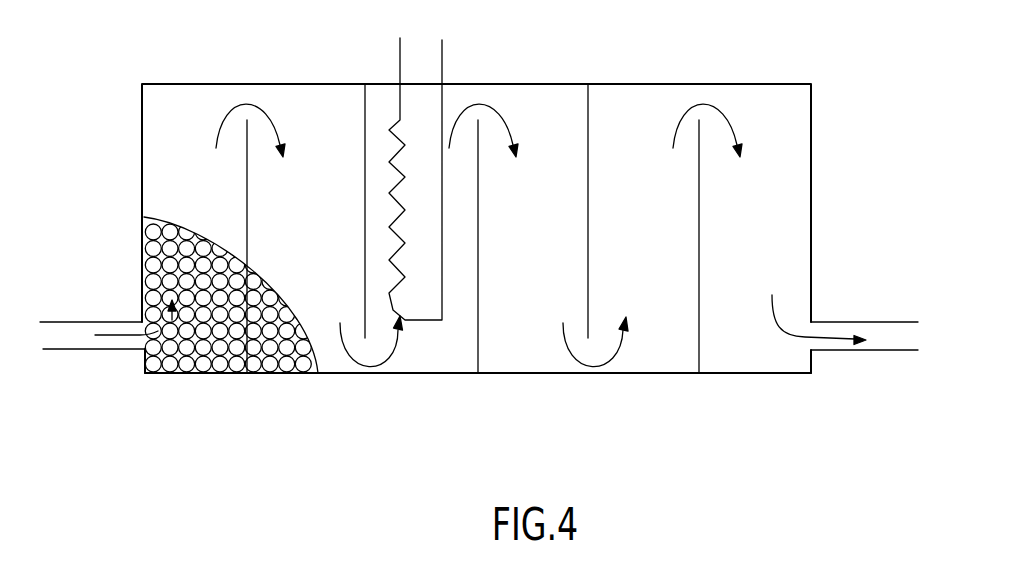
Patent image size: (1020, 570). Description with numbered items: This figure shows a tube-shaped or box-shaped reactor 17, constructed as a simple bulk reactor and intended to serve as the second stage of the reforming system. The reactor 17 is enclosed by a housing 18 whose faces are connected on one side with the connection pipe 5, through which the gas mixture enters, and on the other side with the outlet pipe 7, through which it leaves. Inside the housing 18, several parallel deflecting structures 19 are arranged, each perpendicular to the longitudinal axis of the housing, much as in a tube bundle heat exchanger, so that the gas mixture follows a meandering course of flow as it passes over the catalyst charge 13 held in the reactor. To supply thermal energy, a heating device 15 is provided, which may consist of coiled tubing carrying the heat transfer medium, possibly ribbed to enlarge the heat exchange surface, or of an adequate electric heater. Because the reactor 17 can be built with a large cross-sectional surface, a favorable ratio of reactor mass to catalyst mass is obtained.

The connection pipe 5 is at (65, 337).
The outlet pipe 7 is at (880, 338).
The catalyst charge 13 is at (223, 337).
The heating device 15 is at (438, 58).
The tube-shaped or box-shaped reactor 17 is at (830, 103).
The housing 18 is at (735, 374).
The deflecting structures 19 is at (589, 108).